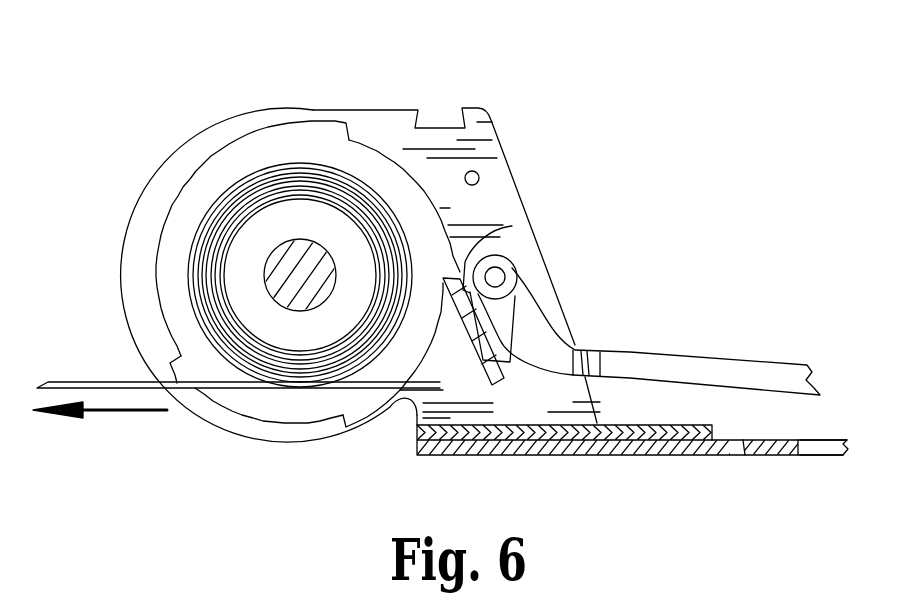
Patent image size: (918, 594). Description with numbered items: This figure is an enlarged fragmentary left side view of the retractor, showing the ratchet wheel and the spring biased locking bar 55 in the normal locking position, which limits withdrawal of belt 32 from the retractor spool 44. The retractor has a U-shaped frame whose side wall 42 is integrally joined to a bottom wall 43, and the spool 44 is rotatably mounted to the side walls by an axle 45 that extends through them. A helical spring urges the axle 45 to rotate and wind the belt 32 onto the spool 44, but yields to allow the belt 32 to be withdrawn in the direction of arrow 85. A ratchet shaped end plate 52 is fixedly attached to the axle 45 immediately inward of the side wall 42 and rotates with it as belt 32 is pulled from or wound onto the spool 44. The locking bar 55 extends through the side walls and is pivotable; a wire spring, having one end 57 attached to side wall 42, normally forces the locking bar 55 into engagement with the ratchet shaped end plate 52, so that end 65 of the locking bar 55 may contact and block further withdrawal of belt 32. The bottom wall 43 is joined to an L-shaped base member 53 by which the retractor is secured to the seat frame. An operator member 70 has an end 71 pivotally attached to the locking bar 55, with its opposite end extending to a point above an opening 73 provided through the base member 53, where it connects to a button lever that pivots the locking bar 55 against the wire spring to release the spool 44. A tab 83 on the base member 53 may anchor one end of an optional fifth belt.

The belt 32 is at (127, 387).
The side wall 42 is at (489, 212).
The bottom wall 43 is at (653, 434).
The retractor spool 44 is at (311, 232).
The axle 45 is at (283, 265).
The ratchet shaped end plate 52 is at (310, 127).
The L-shaped base member 53 is at (632, 456).
The spring biased locking bar 55 is at (490, 378).
The end of wire spring 57 is at (480, 178).
The end of locking bar 65 is at (470, 255).
The operator member 70 is at (715, 368).
The end of operator member 71 is at (518, 263).
The opening 73 is at (815, 447).
The tab 83 is at (782, 457).
The arrow 85 is at (100, 412).